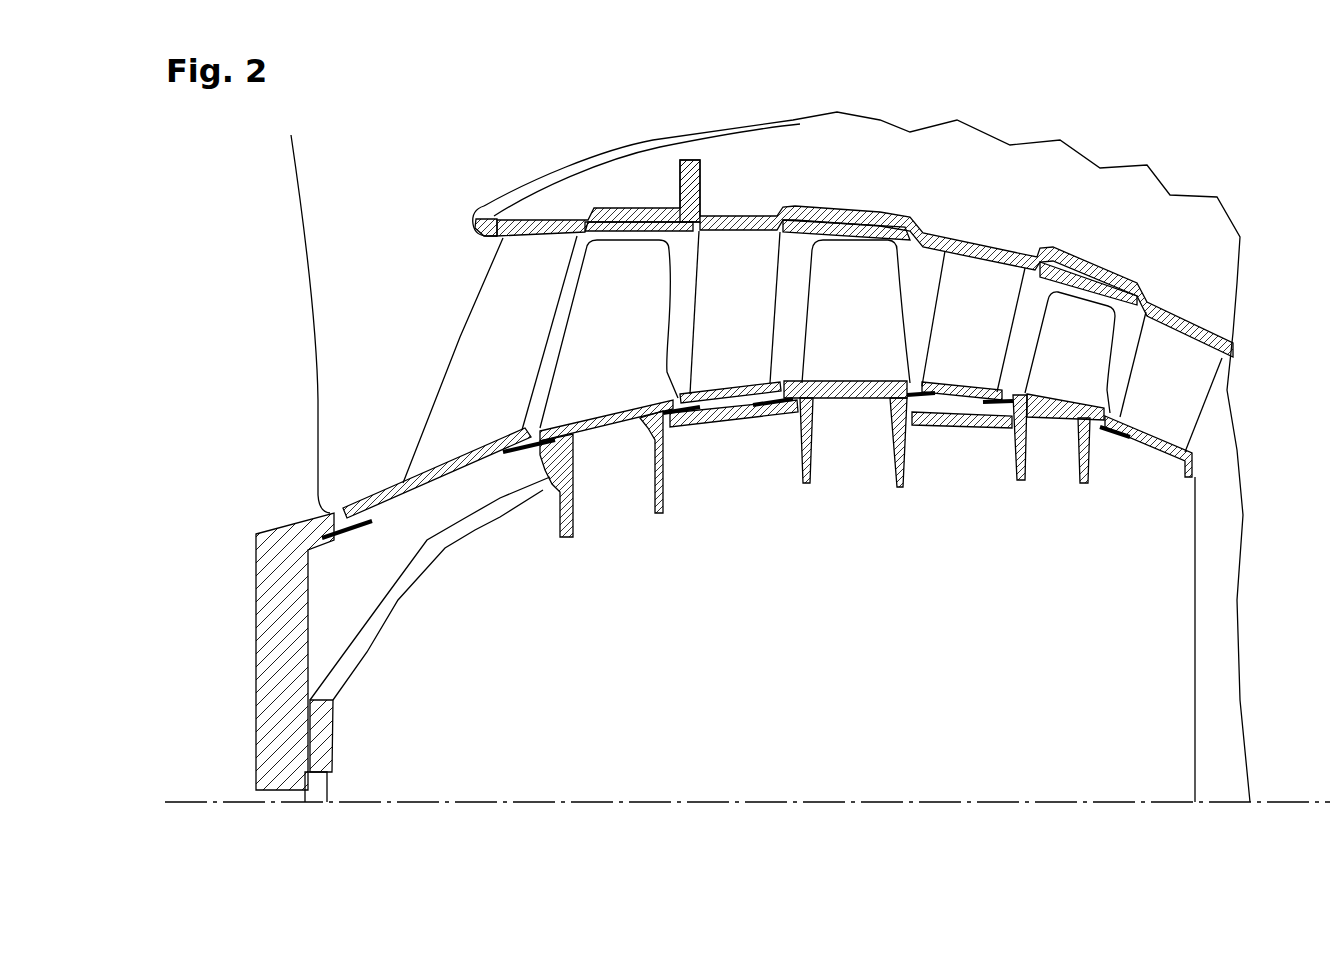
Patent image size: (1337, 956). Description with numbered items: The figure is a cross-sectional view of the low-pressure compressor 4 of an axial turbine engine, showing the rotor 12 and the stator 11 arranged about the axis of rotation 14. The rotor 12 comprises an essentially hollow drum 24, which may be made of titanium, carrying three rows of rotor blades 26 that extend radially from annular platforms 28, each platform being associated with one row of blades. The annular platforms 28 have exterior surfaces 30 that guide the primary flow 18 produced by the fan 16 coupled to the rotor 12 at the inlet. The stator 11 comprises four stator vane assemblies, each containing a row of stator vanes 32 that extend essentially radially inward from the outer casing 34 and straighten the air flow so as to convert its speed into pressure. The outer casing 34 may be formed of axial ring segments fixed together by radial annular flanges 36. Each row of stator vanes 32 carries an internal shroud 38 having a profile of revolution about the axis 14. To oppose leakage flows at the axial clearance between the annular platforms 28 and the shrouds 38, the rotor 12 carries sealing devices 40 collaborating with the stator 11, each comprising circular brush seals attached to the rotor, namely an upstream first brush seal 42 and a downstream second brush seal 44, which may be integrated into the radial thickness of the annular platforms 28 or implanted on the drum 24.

The low-pressure compressor 4 is at (852, 640).
The stator 11 is at (1068, 172).
The rotor 12 is at (407, 710).
The axis of rotation 14 is at (678, 802).
The fan 16 is at (269, 386).
The primary flow 18 is at (428, 353).
The drum 24 is at (897, 442).
The rotor blades 26 is at (608, 286).
The annular platforms 28 is at (610, 420).
The exterior surfaces 30 is at (566, 426).
The stator vanes 32 is at (503, 300).
The outer casing 34 is at (973, 240).
The radial annular flanges 36 is at (680, 184).
The shroud 38 is at (458, 457).
The sealing device 40 is at (431, 534).
The first brush seal 42 is at (677, 430).
The second brush seal 44 is at (542, 480).